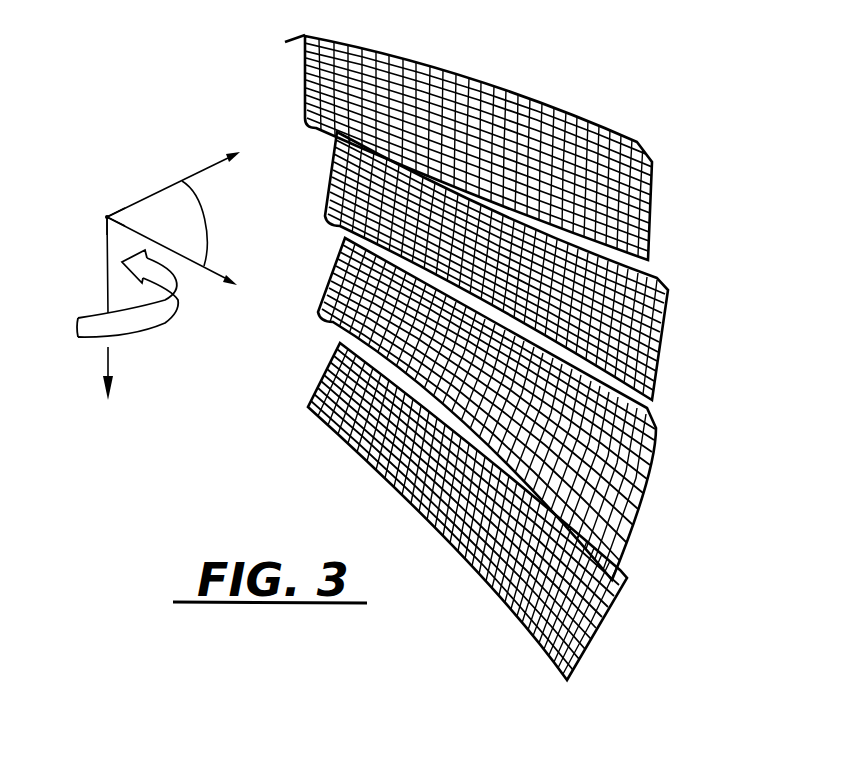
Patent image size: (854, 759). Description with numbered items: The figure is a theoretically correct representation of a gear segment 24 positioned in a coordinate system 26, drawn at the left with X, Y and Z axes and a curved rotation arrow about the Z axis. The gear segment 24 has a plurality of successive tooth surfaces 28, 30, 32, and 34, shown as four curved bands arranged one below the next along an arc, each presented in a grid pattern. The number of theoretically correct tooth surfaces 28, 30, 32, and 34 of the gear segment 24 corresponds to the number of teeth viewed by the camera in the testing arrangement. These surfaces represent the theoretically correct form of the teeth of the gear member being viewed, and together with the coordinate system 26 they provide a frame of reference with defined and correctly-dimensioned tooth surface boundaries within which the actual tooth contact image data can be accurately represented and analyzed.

The gear segment 24 is at (237, 99).
The coordinate system 26 is at (115, 208).
The tooth surface 28 is at (652, 205).
The tooth surface 30 is at (663, 352).
The tooth surface 32 is at (640, 520).
The tooth surface 34 is at (597, 643).